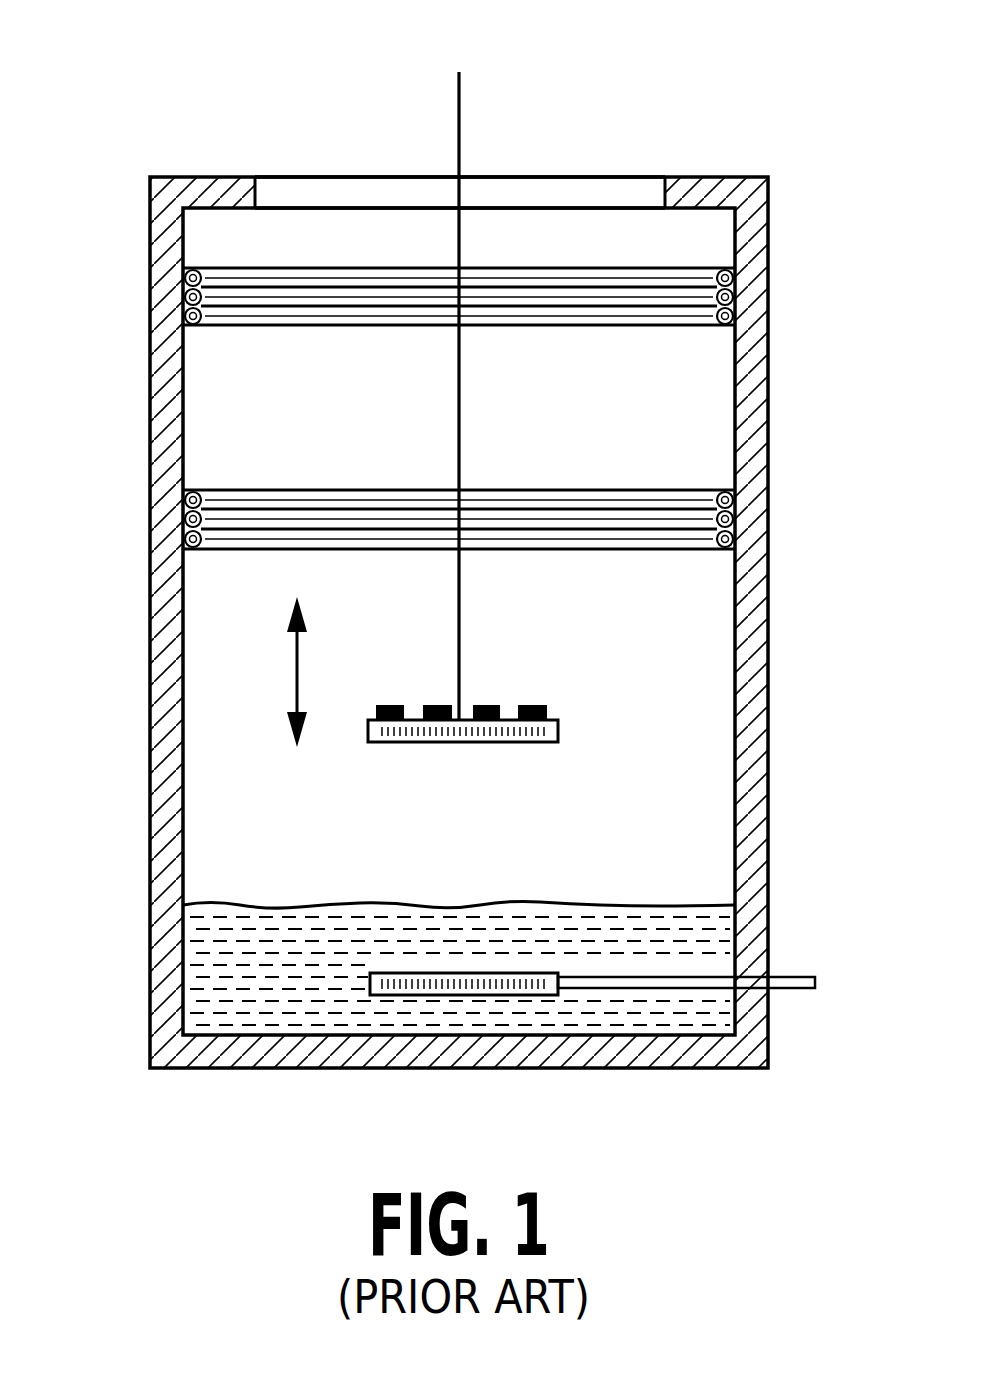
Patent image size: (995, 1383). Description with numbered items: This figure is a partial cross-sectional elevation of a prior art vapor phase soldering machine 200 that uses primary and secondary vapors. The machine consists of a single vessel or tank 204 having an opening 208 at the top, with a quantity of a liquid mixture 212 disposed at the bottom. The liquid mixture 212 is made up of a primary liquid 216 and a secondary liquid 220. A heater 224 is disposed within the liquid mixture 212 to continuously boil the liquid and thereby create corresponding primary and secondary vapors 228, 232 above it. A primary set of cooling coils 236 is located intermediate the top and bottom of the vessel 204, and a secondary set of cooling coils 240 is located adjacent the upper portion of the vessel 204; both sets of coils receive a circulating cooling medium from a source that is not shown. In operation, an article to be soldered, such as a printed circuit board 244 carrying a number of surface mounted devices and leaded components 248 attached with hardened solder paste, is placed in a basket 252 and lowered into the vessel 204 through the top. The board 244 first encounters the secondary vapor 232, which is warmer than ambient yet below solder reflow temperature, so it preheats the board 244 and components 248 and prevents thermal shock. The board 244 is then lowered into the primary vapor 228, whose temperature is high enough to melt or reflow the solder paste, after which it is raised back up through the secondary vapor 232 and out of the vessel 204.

The vapor phase soldering machine 200 is at (163, 90).
The vessel 204 is at (768, 400).
The opening 208 is at (550, 188).
The liquid mixture 212 is at (260, 923).
The primary liquid 216 is at (417, 923).
The secondary liquid 220 is at (673, 920).
The heater 224 is at (442, 995).
The primary vapor 228 is at (683, 720).
The secondary vapor 232 is at (630, 430).
The primary set of cooling coils 236 is at (288, 497).
The secondary set of cooling coils 240 is at (340, 316).
The printed circuit board 244 is at (535, 742).
The surface mounted devices 248 is at (437, 705).
The basket 252 is at (370, 742).